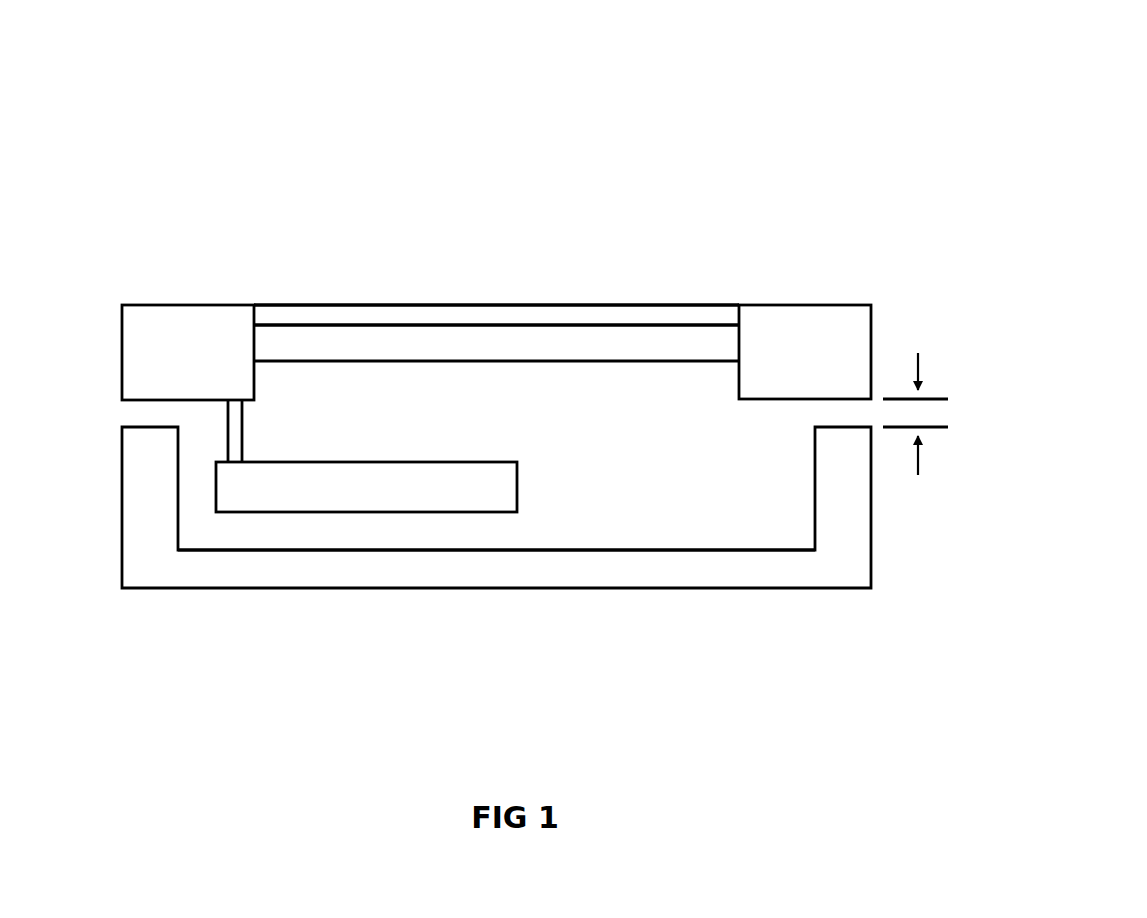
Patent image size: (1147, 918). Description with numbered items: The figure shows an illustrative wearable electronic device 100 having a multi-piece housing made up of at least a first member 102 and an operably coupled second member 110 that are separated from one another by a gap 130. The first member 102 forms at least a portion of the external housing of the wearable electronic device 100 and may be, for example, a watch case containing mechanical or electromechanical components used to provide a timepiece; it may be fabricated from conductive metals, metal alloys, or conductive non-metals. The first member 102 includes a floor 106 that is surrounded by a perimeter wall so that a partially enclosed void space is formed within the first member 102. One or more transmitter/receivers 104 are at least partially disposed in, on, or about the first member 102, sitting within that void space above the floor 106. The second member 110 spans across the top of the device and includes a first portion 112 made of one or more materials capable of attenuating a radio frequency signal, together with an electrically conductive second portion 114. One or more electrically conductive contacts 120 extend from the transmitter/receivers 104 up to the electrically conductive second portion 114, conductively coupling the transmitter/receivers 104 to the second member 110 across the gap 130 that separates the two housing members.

The wearable electronic device 100 is at (1044, 112).
The first member 102 is at (390, 591).
The transmitter/receivers 104 is at (366, 487).
The floor 106 is at (678, 590).
The second member 110 is at (630, 302).
The first portion 112 is at (466, 325).
The electrically conductive second portion 114 is at (180, 304).
The electrically conductive contacts 120 is at (244, 426).
The gap 130 is at (938, 399).